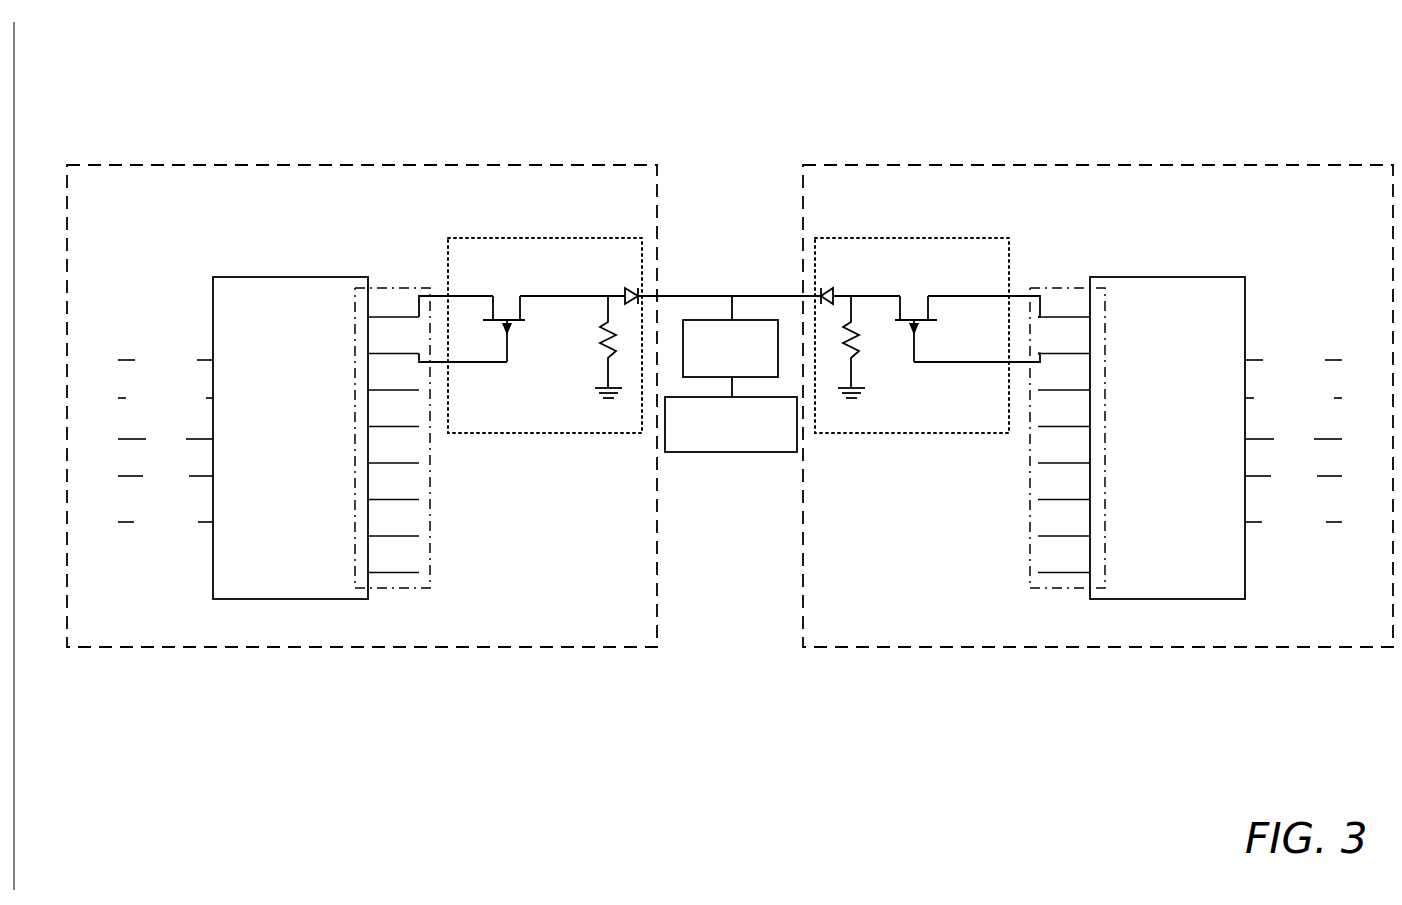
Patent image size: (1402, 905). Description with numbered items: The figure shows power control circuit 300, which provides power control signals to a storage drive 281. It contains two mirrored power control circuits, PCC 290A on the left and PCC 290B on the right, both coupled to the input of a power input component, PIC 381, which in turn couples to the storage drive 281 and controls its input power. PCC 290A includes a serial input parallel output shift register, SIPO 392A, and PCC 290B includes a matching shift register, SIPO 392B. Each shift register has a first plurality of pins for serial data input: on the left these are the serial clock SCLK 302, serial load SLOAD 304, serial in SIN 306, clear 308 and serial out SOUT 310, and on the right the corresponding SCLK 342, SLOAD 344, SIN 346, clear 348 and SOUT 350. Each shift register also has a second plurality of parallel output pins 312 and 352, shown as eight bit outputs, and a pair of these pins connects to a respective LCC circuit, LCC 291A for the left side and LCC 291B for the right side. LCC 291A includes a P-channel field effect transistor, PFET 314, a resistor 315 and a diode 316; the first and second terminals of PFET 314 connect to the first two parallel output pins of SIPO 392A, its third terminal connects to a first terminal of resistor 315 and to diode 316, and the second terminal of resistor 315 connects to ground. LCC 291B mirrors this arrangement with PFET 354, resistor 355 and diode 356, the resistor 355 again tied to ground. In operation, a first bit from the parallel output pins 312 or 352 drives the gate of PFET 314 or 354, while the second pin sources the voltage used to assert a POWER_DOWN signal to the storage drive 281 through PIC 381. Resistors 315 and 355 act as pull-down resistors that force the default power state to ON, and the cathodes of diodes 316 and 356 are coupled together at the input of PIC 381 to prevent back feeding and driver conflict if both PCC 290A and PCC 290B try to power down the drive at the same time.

The power control circuit 300 is at (1252, 73).
The PCC 290A is at (362, 406).
The PCC 290B is at (1098, 406).
The LCC 291A is at (527, 238).
The LCC 291B is at (970, 238).
The serial input parallel output (SIPO) 392A is at (290, 438).
The serial input parallel output (SIPO) 392B is at (1167, 438).
The serial clock (SCLK) 302 is at (120, 360).
The serial load (SLOAD) 304 is at (120, 398).
The serial in (SIN) 306 is at (120, 439).
The clear 308 is at (120, 476).
The serial out (SOUT) 310 is at (120, 522).
The parallel output pins 312 is at (432, 589).
The P-channel field effect transistor (PFET) 314 is at (504, 292).
The resistor 315 is at (607, 357).
The diode 316 is at (624, 291).
The power input component (PIC) 381 is at (730, 348).
The storage drive 281 is at (731, 424).
The serial clock (SCLK) 342 is at (1342, 360).
The serial load (SLOAD) 344 is at (1342, 398).
The serial in (SIN) 346 is at (1342, 439).
The clear 348 is at (1342, 476).
The serial out (SOUT) 350 is at (1342, 522).
The parallel output pins 352 is at (1028, 589).
The power field effect transistor (PFET) 354 is at (917, 292).
The resistor 355 is at (852, 357).
The diode 356 is at (832, 290).